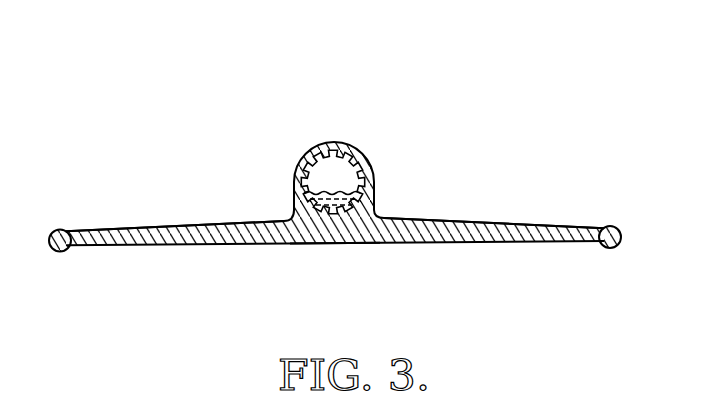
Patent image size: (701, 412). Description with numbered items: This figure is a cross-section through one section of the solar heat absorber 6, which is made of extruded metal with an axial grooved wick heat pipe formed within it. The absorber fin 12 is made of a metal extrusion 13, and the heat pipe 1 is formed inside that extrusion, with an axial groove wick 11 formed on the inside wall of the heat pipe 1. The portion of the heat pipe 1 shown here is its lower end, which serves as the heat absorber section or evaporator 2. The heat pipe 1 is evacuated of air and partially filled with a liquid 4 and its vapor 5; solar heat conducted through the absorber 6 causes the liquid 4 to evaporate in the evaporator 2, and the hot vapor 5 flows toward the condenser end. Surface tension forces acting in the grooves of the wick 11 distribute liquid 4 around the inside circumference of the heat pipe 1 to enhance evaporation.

The heat pipe 1 is at (340, 149).
The evaporator 2 is at (315, 146).
The liquid 4 is at (325, 203).
The vapor 5 is at (337, 177).
The absorber 6 is at (465, 222).
The wick 11 is at (362, 243).
The absorber fin 12 is at (112, 229).
The metal extrusion 13 is at (243, 225).